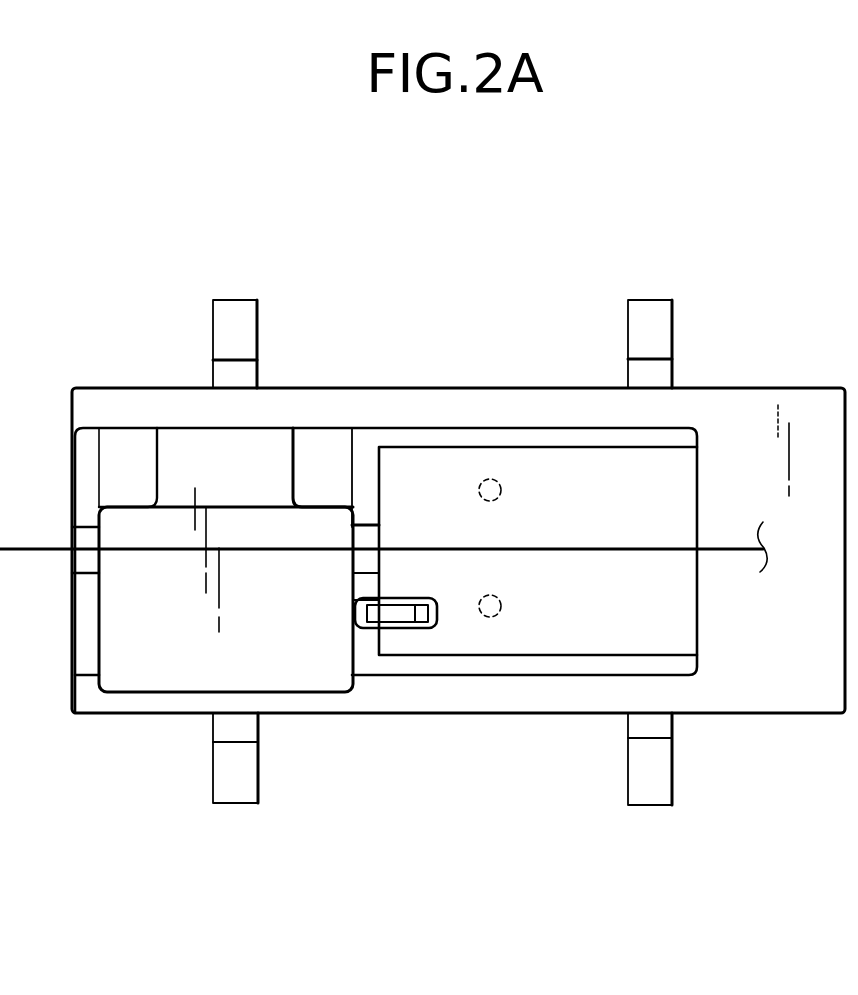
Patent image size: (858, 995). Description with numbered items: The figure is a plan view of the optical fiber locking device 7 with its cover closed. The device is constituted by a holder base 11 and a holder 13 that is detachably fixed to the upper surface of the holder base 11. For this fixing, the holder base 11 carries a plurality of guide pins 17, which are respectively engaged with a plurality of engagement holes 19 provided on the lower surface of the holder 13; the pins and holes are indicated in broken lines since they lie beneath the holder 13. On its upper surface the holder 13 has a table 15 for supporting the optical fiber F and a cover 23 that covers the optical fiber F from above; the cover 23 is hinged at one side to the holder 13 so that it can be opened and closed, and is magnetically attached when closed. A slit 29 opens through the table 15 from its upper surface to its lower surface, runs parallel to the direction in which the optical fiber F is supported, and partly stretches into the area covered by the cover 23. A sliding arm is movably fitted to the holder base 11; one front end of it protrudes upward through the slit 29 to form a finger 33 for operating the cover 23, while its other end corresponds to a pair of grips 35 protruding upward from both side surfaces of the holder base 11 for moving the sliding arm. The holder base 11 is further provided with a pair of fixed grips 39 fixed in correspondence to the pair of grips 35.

The optical fiber locking device 7 is at (458, 485).
The holder base 11 is at (365, 700).
The holder 13 is at (699, 622).
The table 15 is at (651, 551).
The guide pins 17 is at (485, 472).
The engagement holes 19 is at (501, 488).
The cover 23 is at (130, 682).
The slit 29 is at (353, 623).
The finger 33 is at (410, 622).
The grips 35 is at (652, 298).
The fixed grips 39 is at (237, 298).
The optical fiber F is at (30, 548).